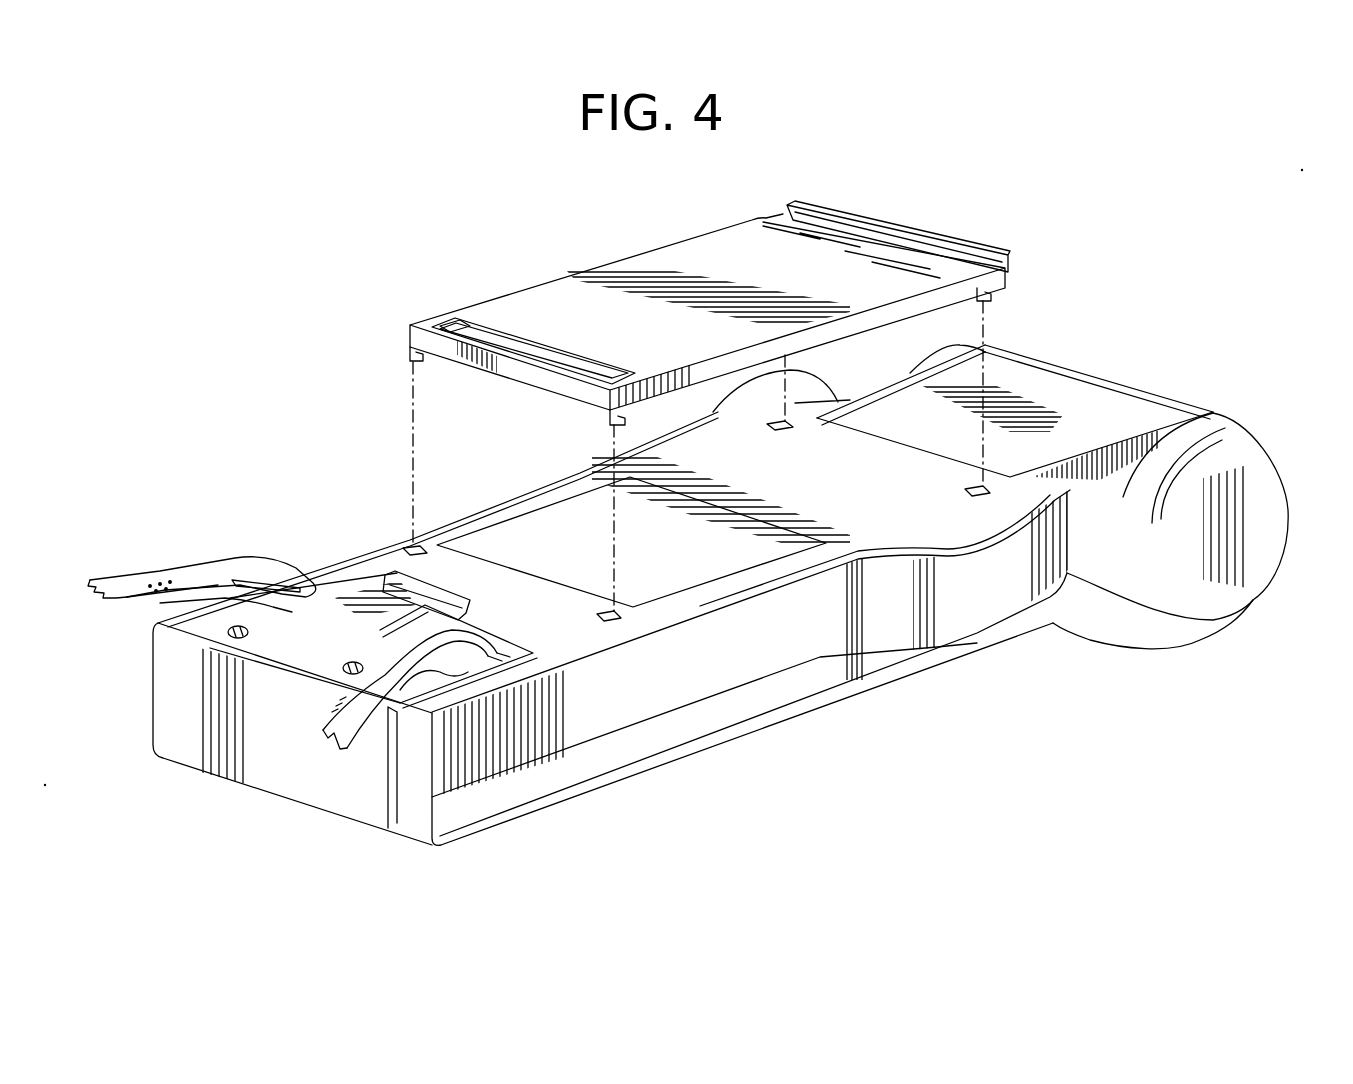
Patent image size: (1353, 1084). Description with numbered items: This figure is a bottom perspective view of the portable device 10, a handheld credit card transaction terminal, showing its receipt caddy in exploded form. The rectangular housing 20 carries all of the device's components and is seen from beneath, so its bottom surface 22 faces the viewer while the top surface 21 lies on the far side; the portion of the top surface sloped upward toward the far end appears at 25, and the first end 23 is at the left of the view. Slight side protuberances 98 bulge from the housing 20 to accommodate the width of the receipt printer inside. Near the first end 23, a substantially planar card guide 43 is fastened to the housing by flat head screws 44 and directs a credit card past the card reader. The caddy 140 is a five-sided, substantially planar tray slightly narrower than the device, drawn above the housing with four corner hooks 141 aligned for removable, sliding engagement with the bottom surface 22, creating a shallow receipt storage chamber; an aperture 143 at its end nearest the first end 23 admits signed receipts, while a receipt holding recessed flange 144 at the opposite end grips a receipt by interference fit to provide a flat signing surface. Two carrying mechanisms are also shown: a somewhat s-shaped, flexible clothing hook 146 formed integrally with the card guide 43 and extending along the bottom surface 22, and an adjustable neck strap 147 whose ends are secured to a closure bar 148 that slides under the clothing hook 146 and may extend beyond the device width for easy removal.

The portable device 10 is at (914, 735).
The housing 20 is at (631, 775).
The top surface 21 is at (741, 739).
The bottom surface 22 is at (468, 573).
The first end 23 is at (408, 822).
The sloped portion of top surface 25 is at (1100, 645).
The card guide 43 is at (210, 752).
The flat head screws 44 is at (228, 638).
The side protuberances 98 is at (786, 367).
The caddy 140 is at (620, 255).
The corner hooks 141 is at (408, 355).
The aperture 143 is at (497, 343).
The recessed flange 144 is at (926, 238).
The clothing hook 146 is at (363, 594).
The neck strap 147 is at (127, 597).
The closure bar 148 is at (277, 568).